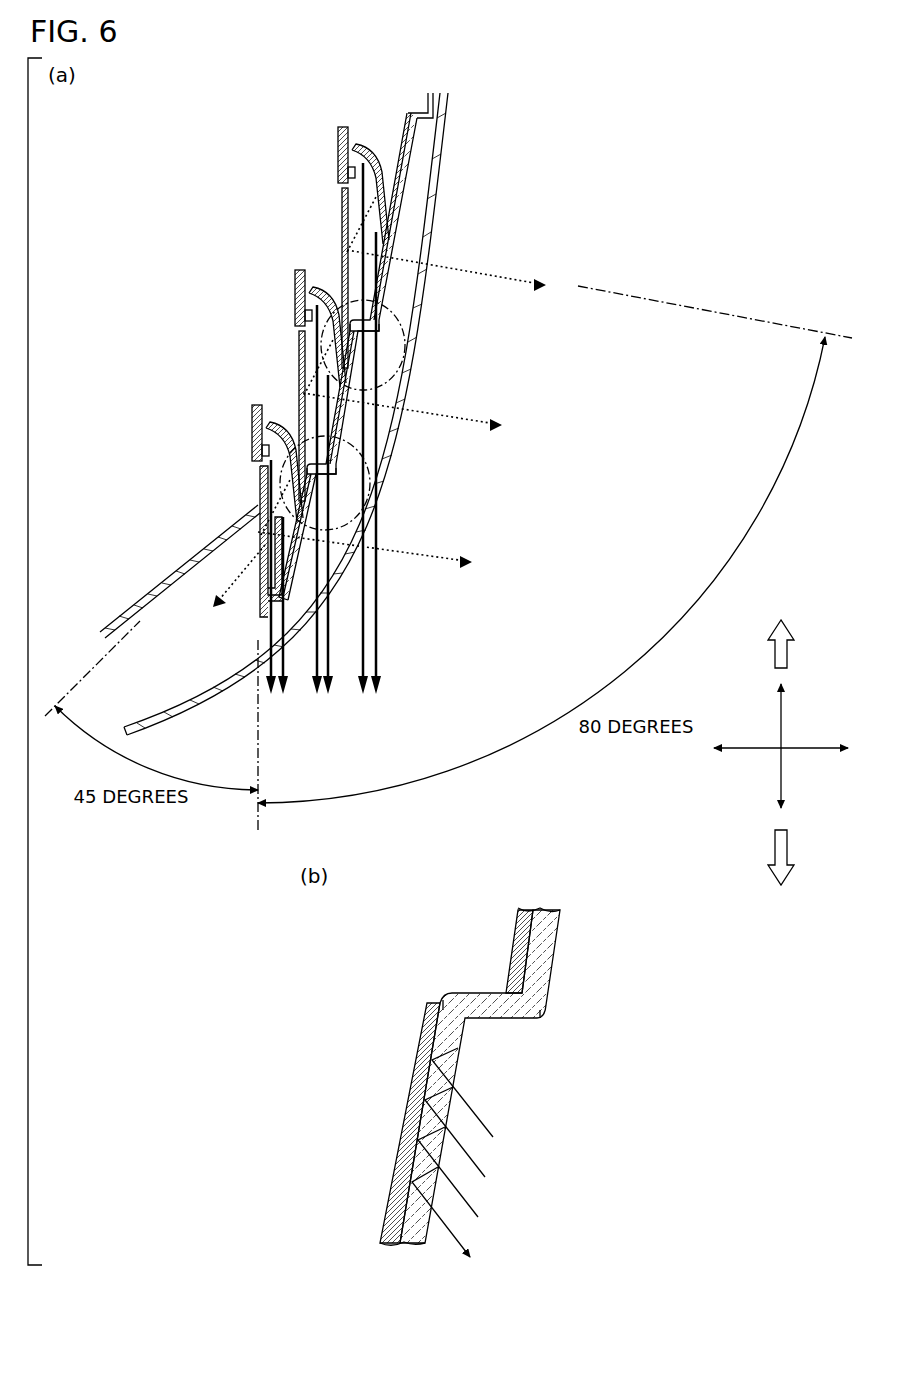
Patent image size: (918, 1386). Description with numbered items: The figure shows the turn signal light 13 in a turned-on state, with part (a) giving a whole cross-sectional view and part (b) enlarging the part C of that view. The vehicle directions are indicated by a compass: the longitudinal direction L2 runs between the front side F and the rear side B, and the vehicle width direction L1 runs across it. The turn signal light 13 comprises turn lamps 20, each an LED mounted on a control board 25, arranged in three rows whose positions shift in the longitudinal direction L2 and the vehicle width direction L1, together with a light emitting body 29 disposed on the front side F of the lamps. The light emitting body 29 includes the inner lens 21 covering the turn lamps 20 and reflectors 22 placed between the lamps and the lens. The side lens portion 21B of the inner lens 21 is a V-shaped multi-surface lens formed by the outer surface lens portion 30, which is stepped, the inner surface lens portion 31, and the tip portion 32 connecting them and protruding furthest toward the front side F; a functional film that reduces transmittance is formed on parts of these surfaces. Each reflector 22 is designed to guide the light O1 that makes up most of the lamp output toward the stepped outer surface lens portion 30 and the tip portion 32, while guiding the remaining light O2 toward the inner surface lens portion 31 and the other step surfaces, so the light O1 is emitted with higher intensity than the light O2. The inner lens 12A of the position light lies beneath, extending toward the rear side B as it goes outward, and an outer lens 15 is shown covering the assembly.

The inner lens 12A is at (178, 570).
The turn signal light 13 is at (246, 123).
The outer lens 15 is at (448, 104).
The turn lamp 20 is at (348, 173).
The inner lens 21 is at (360, 414).
The side lens portion 21B is at (424, 148).
The reflector 22 is at (374, 158).
The control board 25 is at (338, 148).
The light emitting body 29 is at (388, 128).
The outer surface lens portion 30 is at (406, 356).
The inner surface lens portion 31 is at (258, 527).
The tip portion 32 is at (258, 680).
The rear side B is at (788, 657).
The front side F is at (788, 843).
The vehicle width direction L1 is at (762, 758).
The longitudinal direction L2 is at (790, 712).
The part C is at (405, 318).
The light O1 is at (380, 690).
The light O2 is at (510, 275).